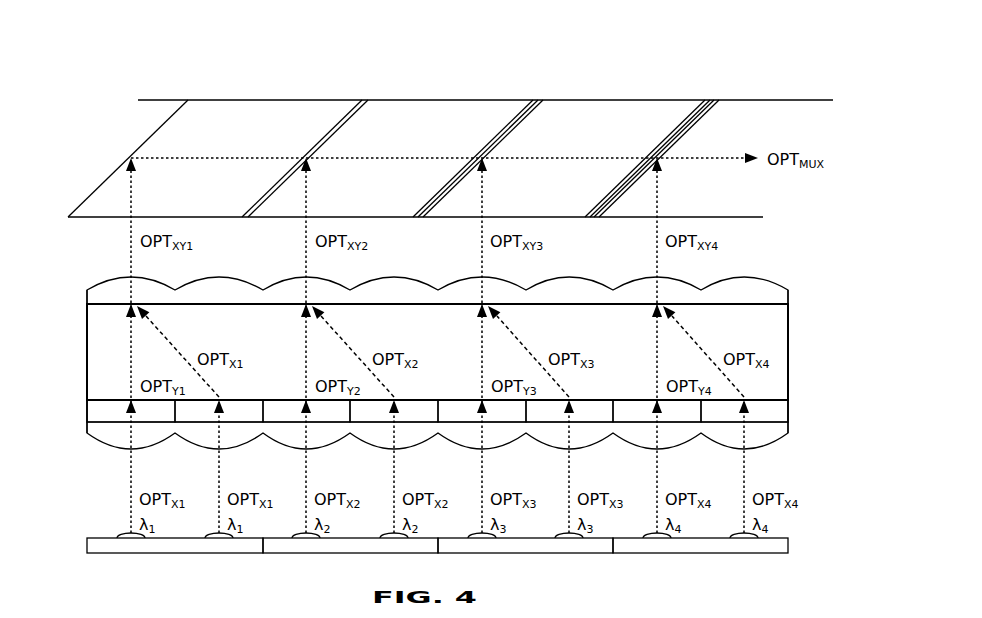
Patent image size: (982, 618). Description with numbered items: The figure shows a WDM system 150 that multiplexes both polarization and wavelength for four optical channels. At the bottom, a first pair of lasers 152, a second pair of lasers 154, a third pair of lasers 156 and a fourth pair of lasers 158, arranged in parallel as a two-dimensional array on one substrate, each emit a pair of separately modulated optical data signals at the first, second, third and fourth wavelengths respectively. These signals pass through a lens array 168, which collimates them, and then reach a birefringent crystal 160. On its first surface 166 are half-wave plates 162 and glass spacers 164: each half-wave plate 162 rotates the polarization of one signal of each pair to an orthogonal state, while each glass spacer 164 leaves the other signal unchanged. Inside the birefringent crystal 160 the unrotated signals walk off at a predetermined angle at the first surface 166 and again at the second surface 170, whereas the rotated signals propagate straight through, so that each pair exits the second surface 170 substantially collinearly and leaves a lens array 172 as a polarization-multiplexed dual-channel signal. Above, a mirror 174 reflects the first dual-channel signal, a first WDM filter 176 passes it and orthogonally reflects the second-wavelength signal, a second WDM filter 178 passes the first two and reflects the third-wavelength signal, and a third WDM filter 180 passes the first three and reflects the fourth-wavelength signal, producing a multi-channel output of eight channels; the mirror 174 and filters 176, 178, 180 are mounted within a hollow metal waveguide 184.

The WDM system 150 is at (133, 70).
The first pair of lasers 152 is at (120, 536).
The second pair of lasers 154 is at (295, 536).
The third pair of lasers 156 is at (471, 536).
The fourth pair of lasers 158 is at (646, 536).
The birefringent crystal 160 is at (730, 304).
The half-wave plates 162 is at (145, 422).
The glass spacers 164 is at (233, 422).
The first surface 166 is at (769, 397).
The lens array 168 is at (122, 450).
The second surface 170 is at (769, 308).
The lens array 172 is at (122, 277).
The mirror 174 is at (147, 140).
The first WDM filter 176 is at (332, 128).
The second WDM filter 178 is at (505, 125).
The third WDM filter 180 is at (669, 137).
The waveguide 184 is at (665, 100).